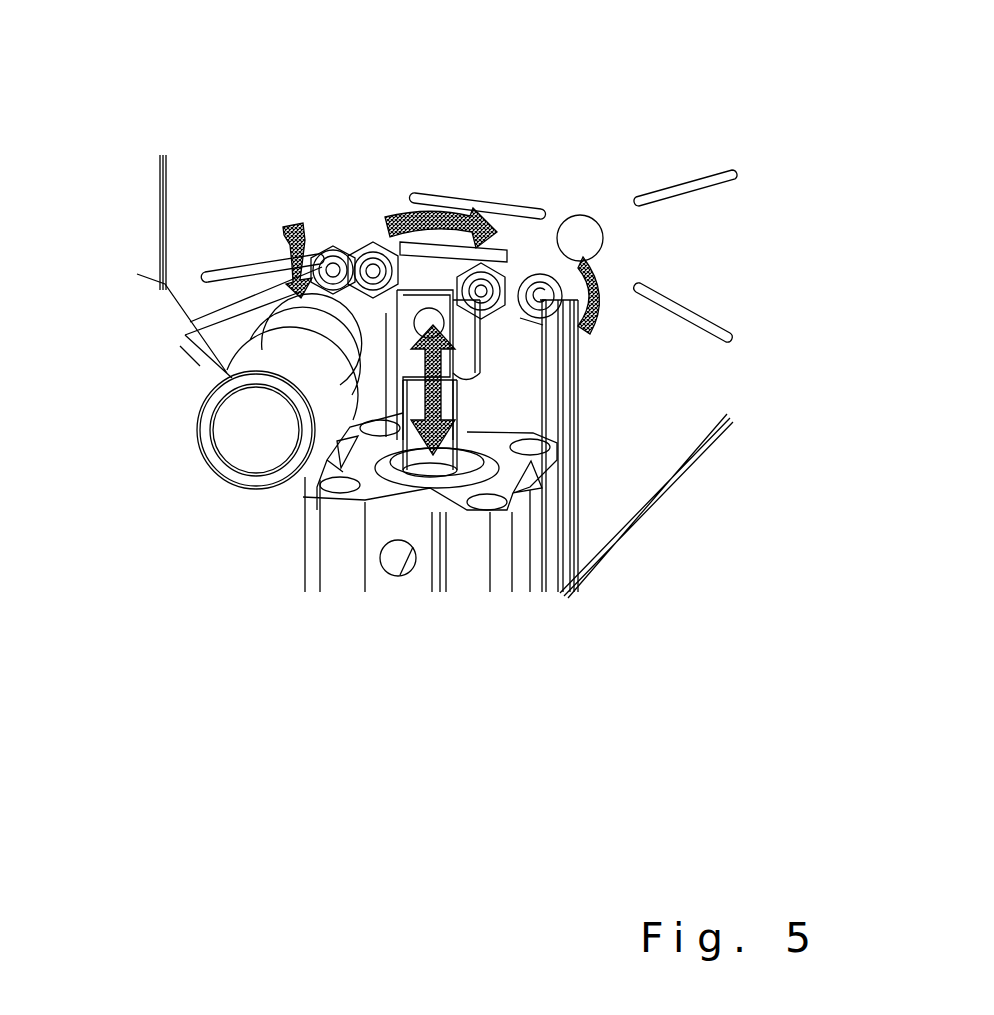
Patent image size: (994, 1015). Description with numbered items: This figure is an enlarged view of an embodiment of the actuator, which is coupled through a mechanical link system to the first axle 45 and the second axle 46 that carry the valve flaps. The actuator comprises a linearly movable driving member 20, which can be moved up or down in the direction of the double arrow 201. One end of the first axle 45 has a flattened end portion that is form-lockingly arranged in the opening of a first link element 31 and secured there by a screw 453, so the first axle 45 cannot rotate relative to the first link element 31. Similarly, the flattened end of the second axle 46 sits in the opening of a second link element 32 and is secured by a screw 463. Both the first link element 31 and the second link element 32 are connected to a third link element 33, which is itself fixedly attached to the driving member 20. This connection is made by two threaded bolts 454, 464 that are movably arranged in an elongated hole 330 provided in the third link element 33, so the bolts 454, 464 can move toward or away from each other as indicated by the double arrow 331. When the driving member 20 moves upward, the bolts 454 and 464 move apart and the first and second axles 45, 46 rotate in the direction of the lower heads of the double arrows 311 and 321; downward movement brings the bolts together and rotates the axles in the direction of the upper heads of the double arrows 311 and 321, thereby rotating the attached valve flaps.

The linearly movable driving member 20 is at (453, 458).
The double arrow 201 is at (482, 297).
The first link element 31 is at (557, 232).
The double arrow 311 is at (607, 295).
The second link element 32 is at (335, 232).
The double arrow 321 is at (282, 249).
The third link element 33 is at (385, 313).
The elongated hole 330 is at (440, 257).
The double arrow 331 is at (420, 195).
The first axle 45 is at (582, 248).
The screw 453 is at (545, 297).
The threaded bolt 454 is at (440, 390).
The second axle 46 is at (375, 235).
The screw 463 is at (333, 277).
The threaded bolt 464 is at (372, 278).